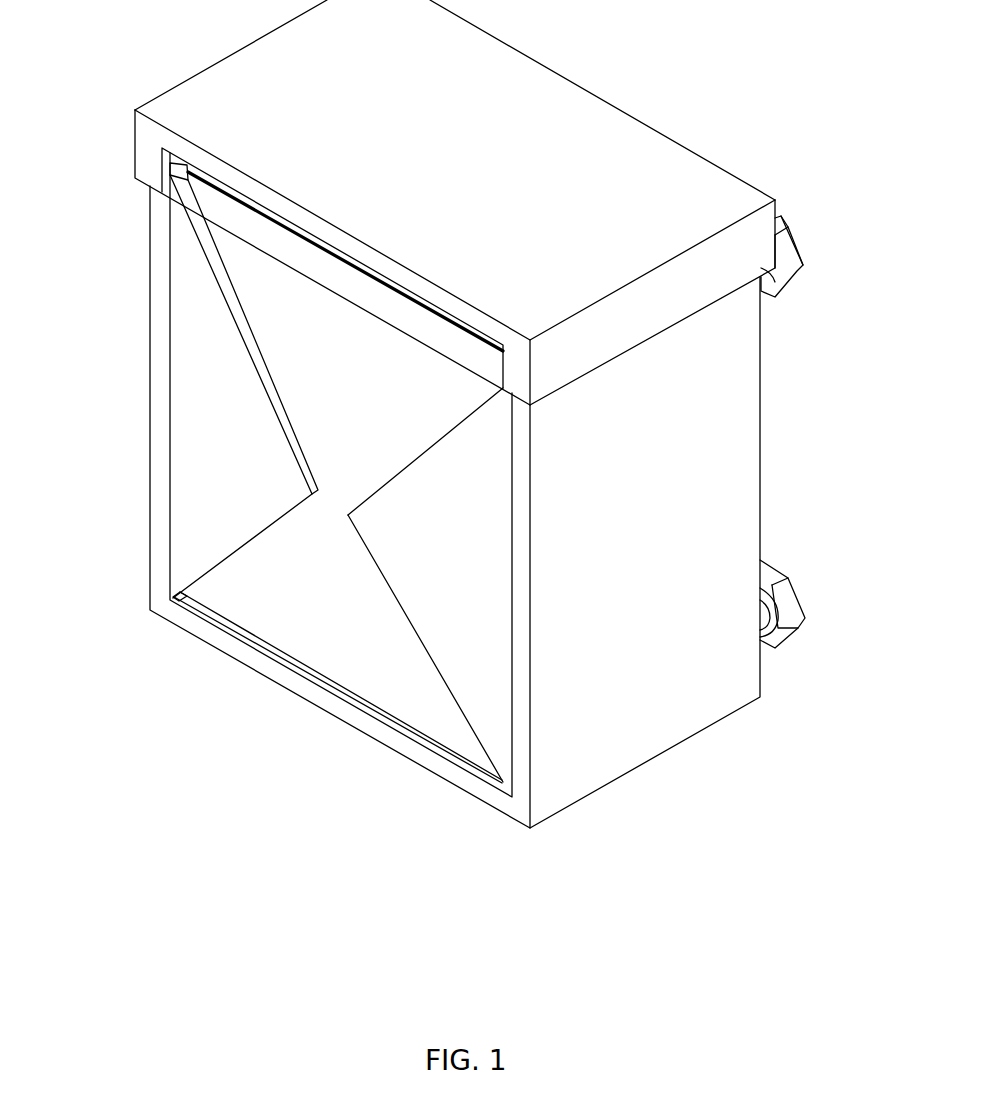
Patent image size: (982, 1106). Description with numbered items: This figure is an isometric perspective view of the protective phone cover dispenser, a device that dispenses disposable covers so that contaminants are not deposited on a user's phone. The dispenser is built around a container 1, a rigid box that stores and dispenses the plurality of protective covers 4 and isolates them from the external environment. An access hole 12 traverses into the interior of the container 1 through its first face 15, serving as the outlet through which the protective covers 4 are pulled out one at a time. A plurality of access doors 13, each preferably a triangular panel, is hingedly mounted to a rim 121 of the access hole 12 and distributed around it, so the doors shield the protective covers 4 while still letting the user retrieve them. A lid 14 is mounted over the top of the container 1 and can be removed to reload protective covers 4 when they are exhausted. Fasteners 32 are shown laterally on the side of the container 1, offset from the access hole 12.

The container 1 is at (688, 796).
The protective covers 4 is at (293, 628).
The access hole 12 is at (384, 688).
The rim of the access hole 121 is at (217, 622).
The access doors 13 is at (248, 340).
The lid 14 is at (647, 135).
The first face 15 is at (161, 299).
The fastening knob 32 is at (790, 245).